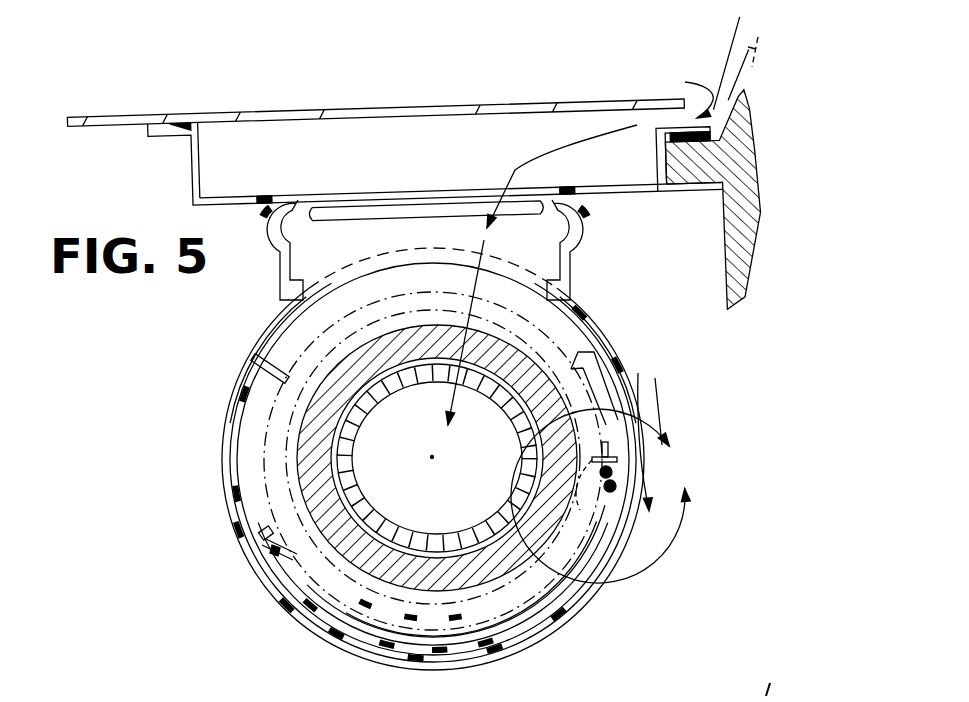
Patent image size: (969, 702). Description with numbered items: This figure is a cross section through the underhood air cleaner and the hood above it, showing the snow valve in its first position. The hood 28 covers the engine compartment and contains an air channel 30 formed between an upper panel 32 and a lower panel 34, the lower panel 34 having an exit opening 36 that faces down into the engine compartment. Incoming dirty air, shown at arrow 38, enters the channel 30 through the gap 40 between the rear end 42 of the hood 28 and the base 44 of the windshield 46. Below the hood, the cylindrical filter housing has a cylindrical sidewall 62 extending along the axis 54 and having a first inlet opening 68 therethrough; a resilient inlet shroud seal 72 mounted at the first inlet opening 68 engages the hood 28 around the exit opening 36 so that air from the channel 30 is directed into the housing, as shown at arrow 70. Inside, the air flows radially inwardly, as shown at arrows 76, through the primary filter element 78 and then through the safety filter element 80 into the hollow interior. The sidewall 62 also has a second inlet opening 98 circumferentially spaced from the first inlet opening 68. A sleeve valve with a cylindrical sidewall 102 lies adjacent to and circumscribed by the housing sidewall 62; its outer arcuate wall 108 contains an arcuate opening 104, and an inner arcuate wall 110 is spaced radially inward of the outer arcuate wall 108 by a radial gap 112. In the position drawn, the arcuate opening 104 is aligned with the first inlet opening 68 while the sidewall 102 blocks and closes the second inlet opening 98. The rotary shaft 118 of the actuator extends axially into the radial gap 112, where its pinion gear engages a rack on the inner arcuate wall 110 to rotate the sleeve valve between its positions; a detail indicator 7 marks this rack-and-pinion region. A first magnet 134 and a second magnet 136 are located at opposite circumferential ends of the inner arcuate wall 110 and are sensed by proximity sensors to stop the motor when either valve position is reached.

The hood 28 is at (545, 103).
The air channel 30 is at (420, 158).
The upper panel 32 is at (216, 128).
The lower panel 34 is at (258, 190).
The exit opening 36 is at (338, 190).
The arrow 38 is at (685, 82).
The gap 40 is at (745, 20).
The rear end 42 is at (685, 82).
The base 44 is at (757, 120).
The windshield 46 is at (767, 63).
The axis 54 is at (432, 457).
The cylindrical sidewall 62 is at (225, 420).
The first inlet opening 68 is at (322, 278).
The arrow 70 is at (520, 166).
The inlet shroud seal 72 is at (594, 254).
The arrows 76 is at (454, 410).
The primary filter element 78 is at (367, 378).
The safety filter element 80 is at (345, 435).
The second inlet opening 98 is at (222, 486).
The cylindrical sidewall 102 is at (258, 530).
The arcuate opening 104 is at (577, 352).
The outer arcuate wall 108 is at (560, 500).
The inner arcuate wall 110 is at (552, 548).
The radial gap 112 is at (558, 537).
The rotary shaft 118 is at (598, 518).
The first magnet 134 is at (658, 423).
The second magnet 136 is at (272, 548).
The section view indicator 7 is at (665, 442).